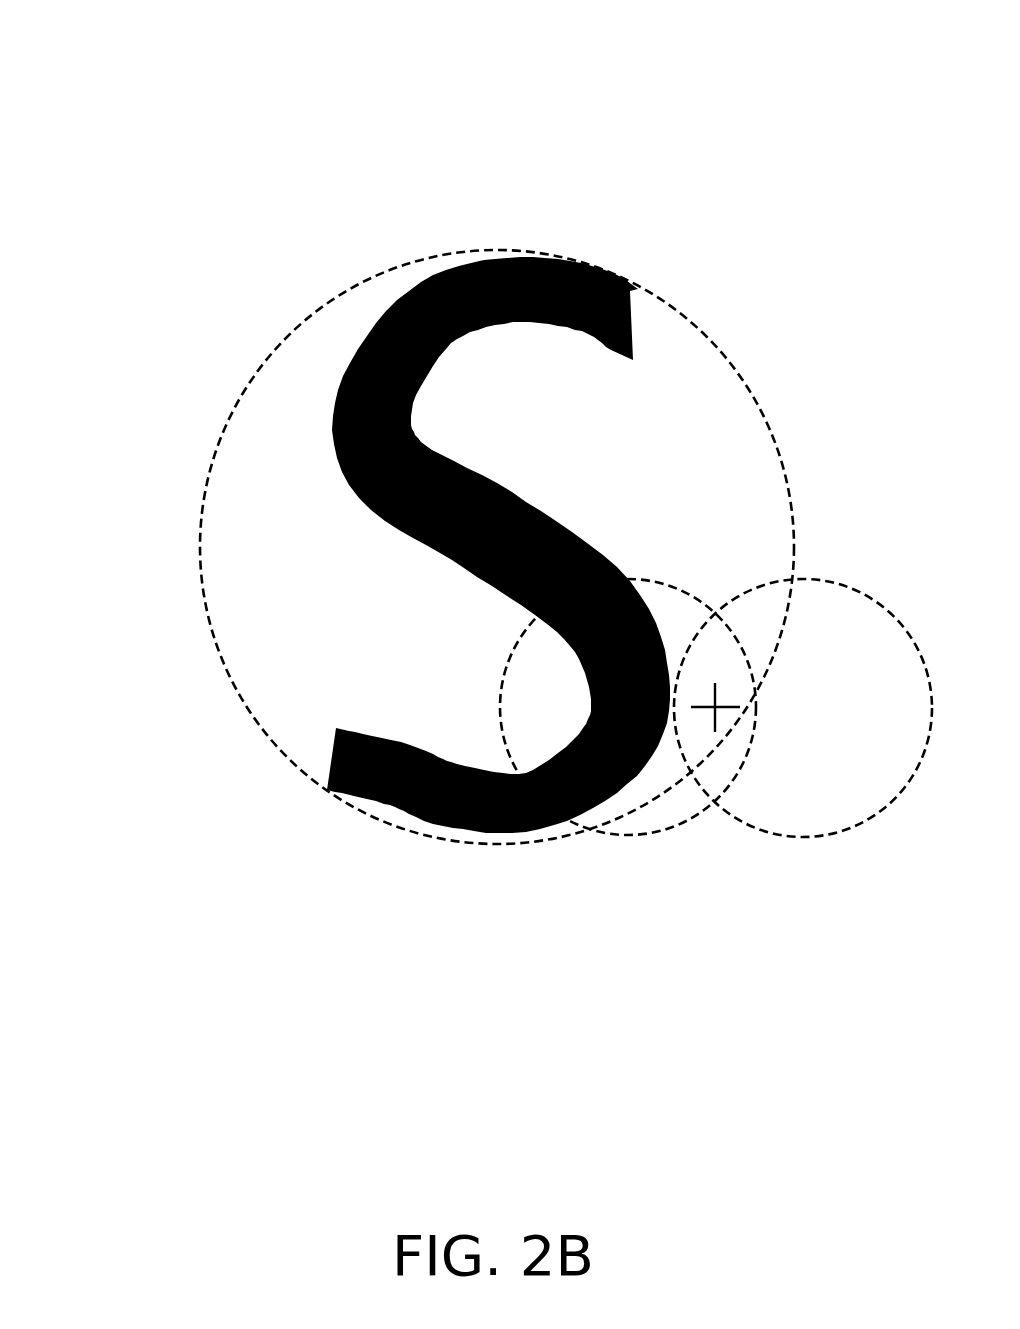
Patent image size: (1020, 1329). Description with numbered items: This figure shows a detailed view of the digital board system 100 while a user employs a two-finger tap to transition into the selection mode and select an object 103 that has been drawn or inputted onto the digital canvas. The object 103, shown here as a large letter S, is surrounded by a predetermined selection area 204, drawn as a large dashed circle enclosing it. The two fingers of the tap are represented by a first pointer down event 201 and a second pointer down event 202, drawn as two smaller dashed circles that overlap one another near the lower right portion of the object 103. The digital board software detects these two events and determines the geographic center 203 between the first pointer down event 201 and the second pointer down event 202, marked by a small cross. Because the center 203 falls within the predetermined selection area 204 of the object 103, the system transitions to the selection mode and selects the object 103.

The digital board system 100 is at (58, 31).
The object 103 is at (495, 545).
The first pointer down event 201 is at (652, 836).
The second pointer down event 202 is at (864, 826).
The geographic center 203 is at (723, 700).
The predetermined selection area 204 is at (497, 547).